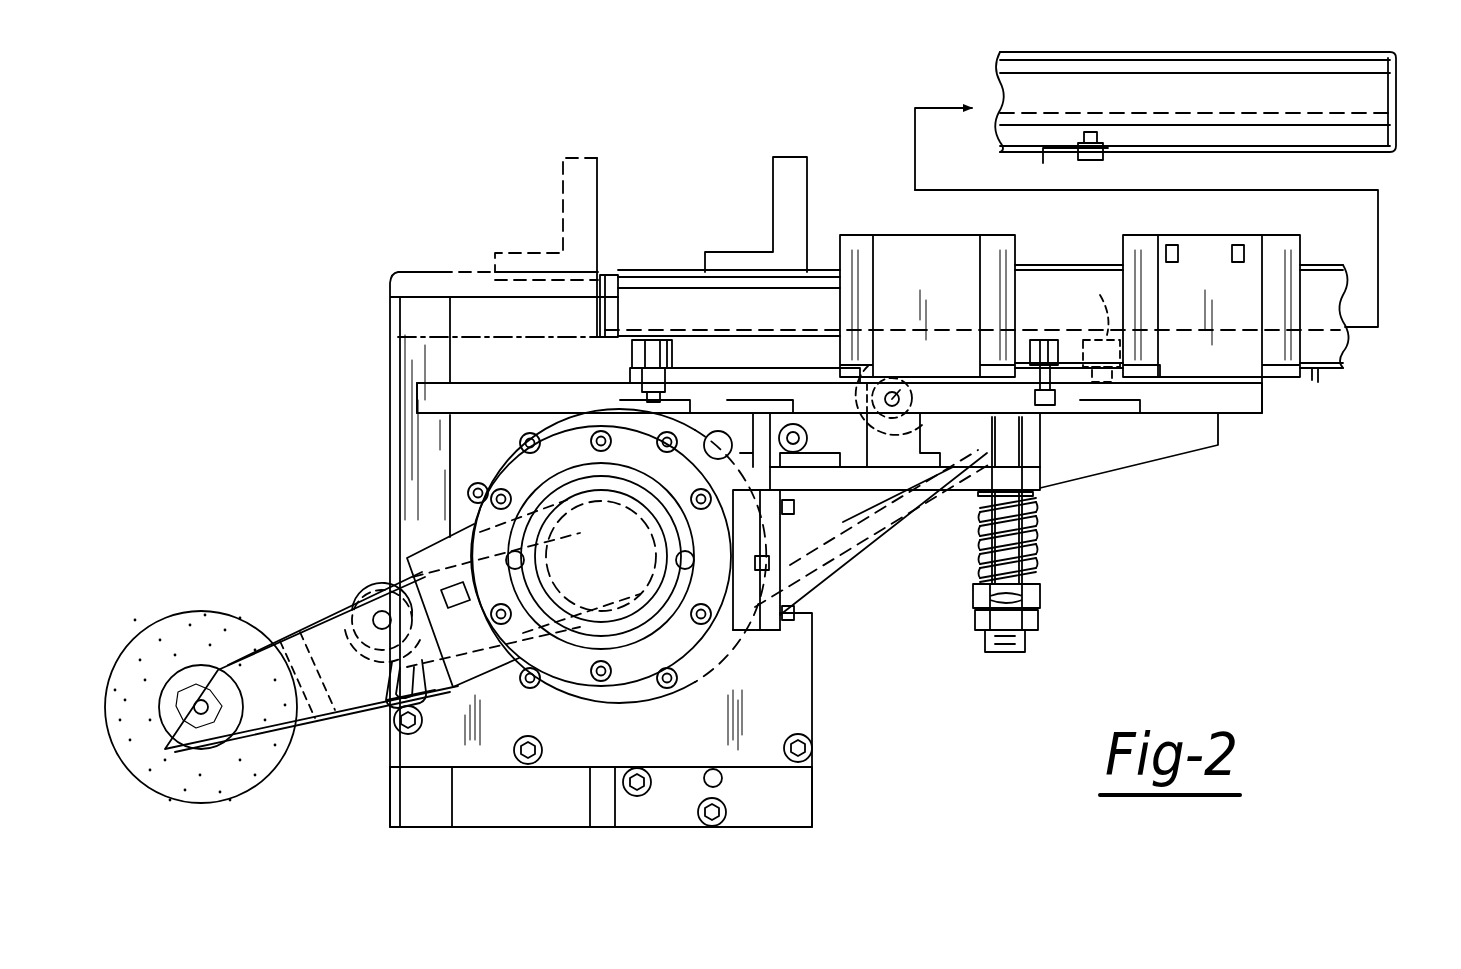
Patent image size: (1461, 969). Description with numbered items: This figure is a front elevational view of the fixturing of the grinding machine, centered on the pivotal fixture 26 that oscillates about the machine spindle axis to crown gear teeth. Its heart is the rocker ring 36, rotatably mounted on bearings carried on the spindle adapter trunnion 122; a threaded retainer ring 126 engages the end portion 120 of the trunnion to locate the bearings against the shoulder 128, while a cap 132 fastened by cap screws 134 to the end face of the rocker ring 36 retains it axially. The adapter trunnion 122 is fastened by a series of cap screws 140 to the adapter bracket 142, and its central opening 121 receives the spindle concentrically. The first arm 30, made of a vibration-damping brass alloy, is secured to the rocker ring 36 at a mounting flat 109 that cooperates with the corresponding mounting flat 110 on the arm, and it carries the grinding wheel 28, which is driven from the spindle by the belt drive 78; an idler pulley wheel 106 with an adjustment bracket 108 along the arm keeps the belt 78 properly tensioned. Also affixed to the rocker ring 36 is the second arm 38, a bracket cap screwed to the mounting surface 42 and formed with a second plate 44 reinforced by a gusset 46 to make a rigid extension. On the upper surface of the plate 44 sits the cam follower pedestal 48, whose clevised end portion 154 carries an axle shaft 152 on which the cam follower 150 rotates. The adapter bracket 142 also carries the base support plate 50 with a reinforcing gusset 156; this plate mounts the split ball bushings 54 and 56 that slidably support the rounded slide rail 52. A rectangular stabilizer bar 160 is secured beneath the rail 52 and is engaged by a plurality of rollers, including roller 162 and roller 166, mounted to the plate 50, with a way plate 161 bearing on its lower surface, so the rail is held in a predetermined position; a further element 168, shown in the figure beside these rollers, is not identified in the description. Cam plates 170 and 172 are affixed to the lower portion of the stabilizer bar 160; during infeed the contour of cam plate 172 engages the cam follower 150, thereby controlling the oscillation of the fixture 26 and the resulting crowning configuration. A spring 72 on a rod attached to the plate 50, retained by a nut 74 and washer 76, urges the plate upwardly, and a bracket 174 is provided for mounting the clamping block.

The pivotal fixture 26 is at (452, 485).
The grinding wheel 28 is at (122, 656).
The first arm 30 is at (304, 710).
The rocker ring 36 is at (552, 692).
The second arm 38 is at (894, 580).
The mounting surface 42 is at (800, 598).
The second plate 44 is at (1040, 468).
The gusset 46 is at (921, 522).
The cam follower pedestal 48 is at (870, 500).
The base support plate 50 is at (1141, 415).
The slide rail 52 is at (1186, 35).
The split ball bushing 54 is at (950, 237).
The split ball bushing 56 is at (1249, 237).
The spring 72 is at (1033, 549).
The nut 74 is at (1040, 623).
The washer 76 is at (1040, 593).
The belt drive 78 is at (270, 626).
The idler pulley wheel 106 is at (405, 571).
The adjustment bracket 108 is at (395, 702).
The mounting flat 109 is at (375, 589).
The mounting flat 110 is at (478, 690).
The end portion 120 is at (551, 514).
The central opening 121 is at (640, 587).
The spindle adapter trunnion 122 is at (722, 663).
The threaded retainer ring 126 is at (525, 528).
The shoulder 128 is at (386, 378).
The cap 132 is at (560, 418).
The cap screws 134 is at (522, 443).
The cap screws 140 is at (665, 695).
The adapter bracket 142 is at (815, 720).
The cam follower 150 is at (930, 447).
The axle shaft 152 is at (912, 379).
The clevised end portion 154 is at (845, 415).
The reinforcing gusset 156 is at (1192, 446).
The stabilizer bar 160 is at (632, 349).
The way plate 161 is at (800, 358).
The roller 162 is at (673, 352).
The roller 166 is at (1048, 340).
The stop 168 is at (1112, 340).
The cam plate 170 is at (1046, 162).
The cam plate 172 is at (1141, 380).
The bracket 174 is at (600, 178).